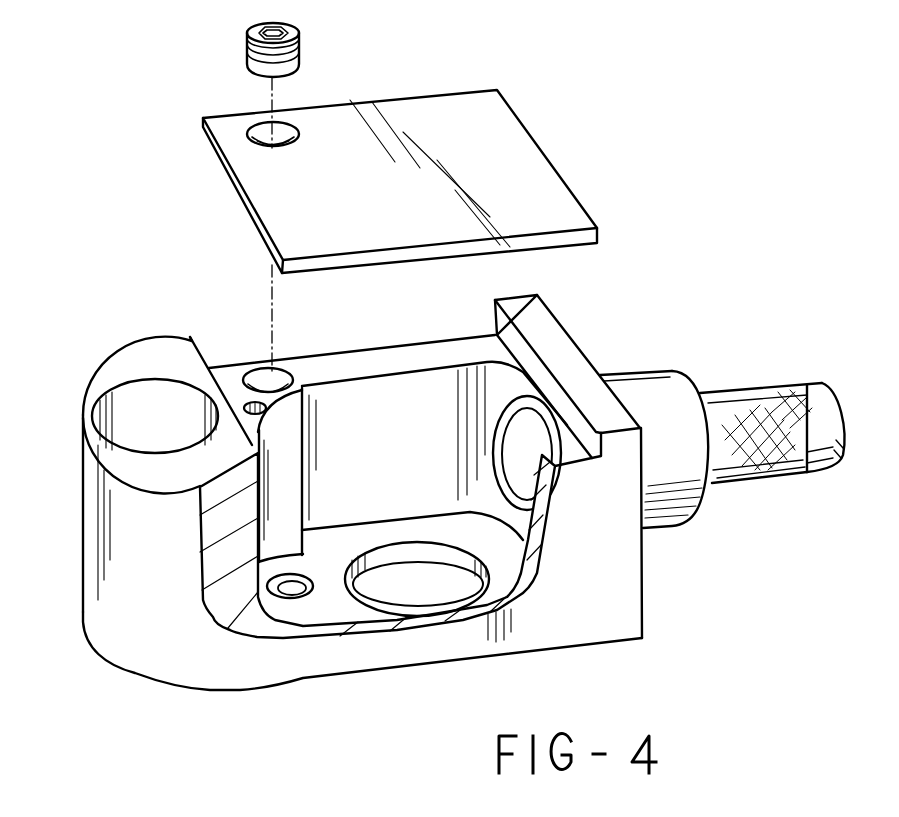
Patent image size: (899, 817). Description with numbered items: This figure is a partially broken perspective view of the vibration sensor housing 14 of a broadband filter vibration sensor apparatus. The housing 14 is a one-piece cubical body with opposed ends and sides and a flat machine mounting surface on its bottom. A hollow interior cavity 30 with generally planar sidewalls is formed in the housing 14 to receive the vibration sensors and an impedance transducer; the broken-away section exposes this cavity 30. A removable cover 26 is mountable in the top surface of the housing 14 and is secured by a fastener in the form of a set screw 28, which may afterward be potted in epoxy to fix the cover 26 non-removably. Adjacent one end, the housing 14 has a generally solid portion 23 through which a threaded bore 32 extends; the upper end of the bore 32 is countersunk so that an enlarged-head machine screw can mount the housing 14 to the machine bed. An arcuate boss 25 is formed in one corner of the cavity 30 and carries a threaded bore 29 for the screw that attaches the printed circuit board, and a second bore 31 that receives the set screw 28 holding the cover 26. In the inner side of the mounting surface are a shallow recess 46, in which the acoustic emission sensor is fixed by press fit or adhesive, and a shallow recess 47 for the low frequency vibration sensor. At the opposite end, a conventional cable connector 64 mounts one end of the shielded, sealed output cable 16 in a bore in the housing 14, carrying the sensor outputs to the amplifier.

The vibration sensor housing 14 is at (130, 337).
The output cable 16 is at (804, 380).
The solid portion 23 is at (222, 575).
The arcuate boss 25 is at (283, 487).
The removable cover 26 is at (519, 151).
The set screw 28 is at (247, 62).
The threaded bore 29 is at (264, 407).
The hollow interior cavity 30 is at (511, 572).
The second bore 31 is at (290, 378).
The threaded bore 32 is at (148, 450).
The shallow recess 46 is at (288, 590).
The shallow recess 47 is at (352, 596).
The cable connector 64 is at (647, 387).